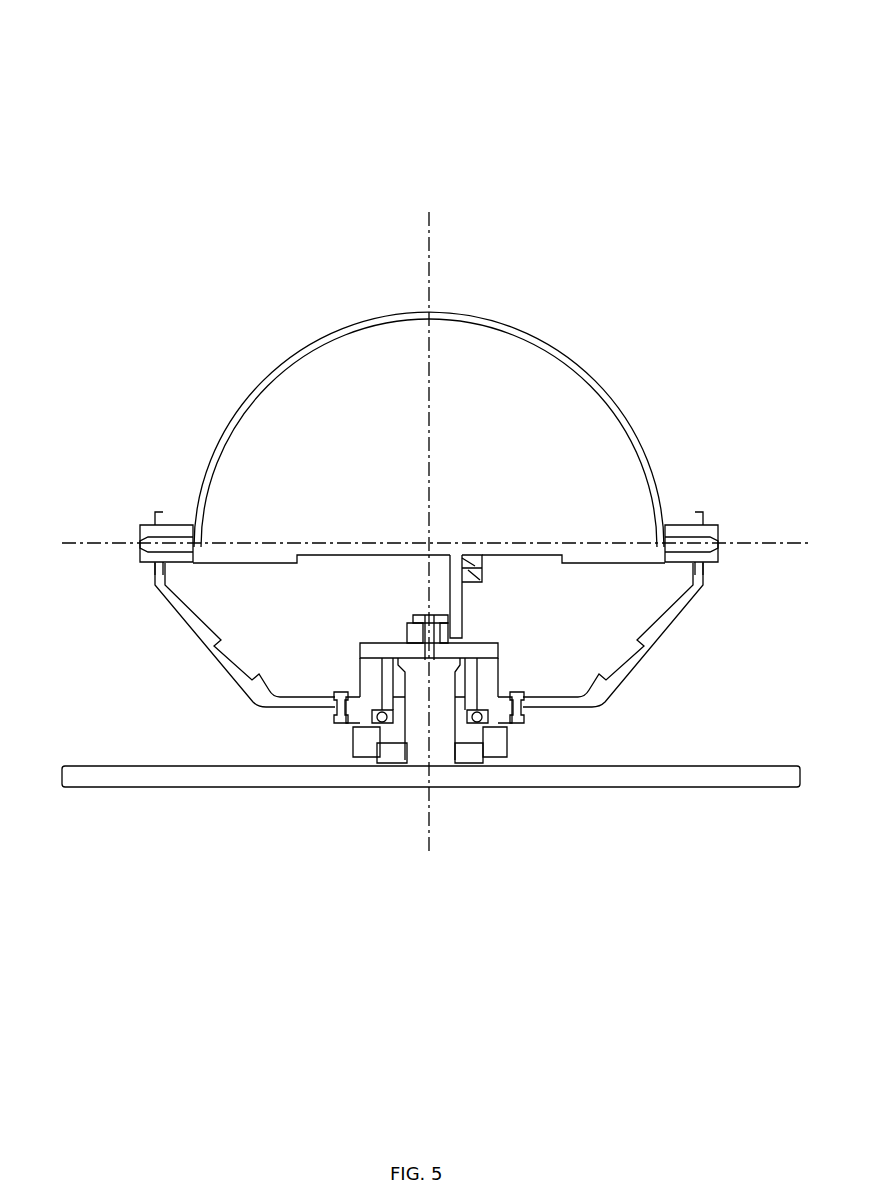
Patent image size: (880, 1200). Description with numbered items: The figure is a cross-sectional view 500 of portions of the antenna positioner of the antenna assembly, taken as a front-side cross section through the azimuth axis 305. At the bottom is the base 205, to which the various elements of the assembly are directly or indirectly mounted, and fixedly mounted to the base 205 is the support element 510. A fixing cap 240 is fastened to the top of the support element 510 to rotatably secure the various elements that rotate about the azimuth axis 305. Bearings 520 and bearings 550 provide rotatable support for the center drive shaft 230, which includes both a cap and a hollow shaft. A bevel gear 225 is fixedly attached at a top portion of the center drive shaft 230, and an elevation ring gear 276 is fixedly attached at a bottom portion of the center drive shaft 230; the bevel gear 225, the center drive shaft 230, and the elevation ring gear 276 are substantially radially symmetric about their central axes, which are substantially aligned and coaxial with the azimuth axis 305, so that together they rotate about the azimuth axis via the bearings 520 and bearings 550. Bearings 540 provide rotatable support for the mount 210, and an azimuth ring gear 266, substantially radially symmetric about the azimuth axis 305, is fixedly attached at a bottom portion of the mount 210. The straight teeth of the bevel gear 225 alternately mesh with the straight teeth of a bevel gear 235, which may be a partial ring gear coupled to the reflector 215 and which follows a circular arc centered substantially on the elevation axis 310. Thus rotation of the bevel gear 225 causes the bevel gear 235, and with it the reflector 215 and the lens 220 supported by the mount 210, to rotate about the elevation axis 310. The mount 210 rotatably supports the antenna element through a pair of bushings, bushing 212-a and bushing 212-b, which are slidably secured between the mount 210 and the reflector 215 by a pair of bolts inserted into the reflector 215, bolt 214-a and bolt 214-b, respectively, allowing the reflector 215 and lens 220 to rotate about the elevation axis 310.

The cross-sectional view 500 is at (706, 46).
The azimuth axis 305 is at (430, 262).
The elevation axis 310 is at (748, 548).
The lens 220 is at (636, 422).
The bushing 212-a is at (156, 520).
The bushing 212-b is at (708, 521).
The bolt 214-a is at (153, 538).
The bolt 214-b is at (712, 538).
The reflector 215 is at (604, 556).
The mount 210 is at (622, 662).
The bevel gear 235 is at (464, 600).
The fixing cap 240 is at (422, 614).
The bevel gear 225 is at (411, 626).
The bearings 550 is at (452, 656).
The center drive shaft 230 is at (392, 690).
The bearings 540 is at (486, 716).
The azimuth ring gear 266 is at (334, 716).
The elevation ring gear 276 is at (352, 744).
The support element 510 is at (418, 750).
The bearings 520 is at (476, 750).
The base 205 is at (678, 788).